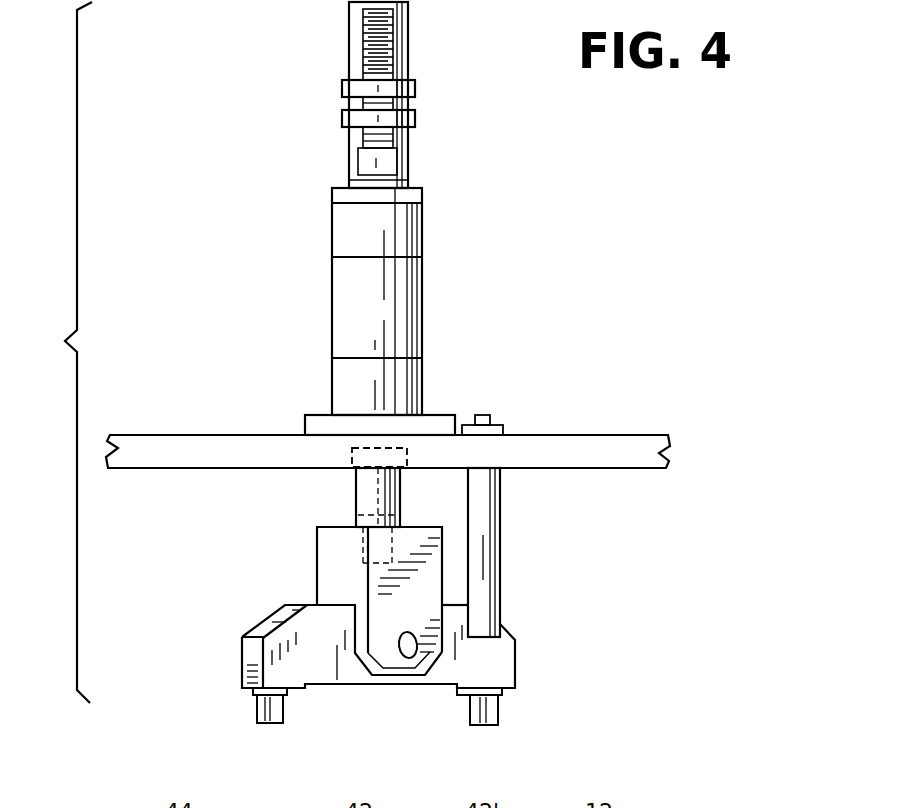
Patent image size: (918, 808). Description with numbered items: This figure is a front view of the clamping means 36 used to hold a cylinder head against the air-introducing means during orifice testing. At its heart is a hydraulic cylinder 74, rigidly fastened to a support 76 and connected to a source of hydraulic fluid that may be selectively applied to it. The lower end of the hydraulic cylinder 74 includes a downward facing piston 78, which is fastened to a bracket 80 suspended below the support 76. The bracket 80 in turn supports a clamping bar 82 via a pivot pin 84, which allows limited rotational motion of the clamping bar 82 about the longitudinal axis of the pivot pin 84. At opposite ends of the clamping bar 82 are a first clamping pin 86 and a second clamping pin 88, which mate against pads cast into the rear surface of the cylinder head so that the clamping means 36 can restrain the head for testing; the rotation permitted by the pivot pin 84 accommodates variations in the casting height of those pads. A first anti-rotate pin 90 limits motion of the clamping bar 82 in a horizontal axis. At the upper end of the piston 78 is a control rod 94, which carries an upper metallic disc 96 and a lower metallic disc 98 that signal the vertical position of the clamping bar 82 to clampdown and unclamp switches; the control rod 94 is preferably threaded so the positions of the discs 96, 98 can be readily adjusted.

The clamping means 36 is at (60, 352).
The hydraulic cylinder 74 is at (393, 297).
The support 76 is at (565, 452).
The piston 78 is at (375, 486).
The bracket 80 is at (338, 551).
The clamping bar 82 is at (273, 620).
The pivot pin 84 is at (407, 660).
The first clamping pin 86 is at (277, 713).
The second clamping pin 88 is at (498, 712).
The first anti-rotate pin 90 is at (488, 544).
The control rod 94 is at (392, 43).
The upper metallic disc 96 is at (415, 93).
The lower metallic disc 98 is at (415, 117).